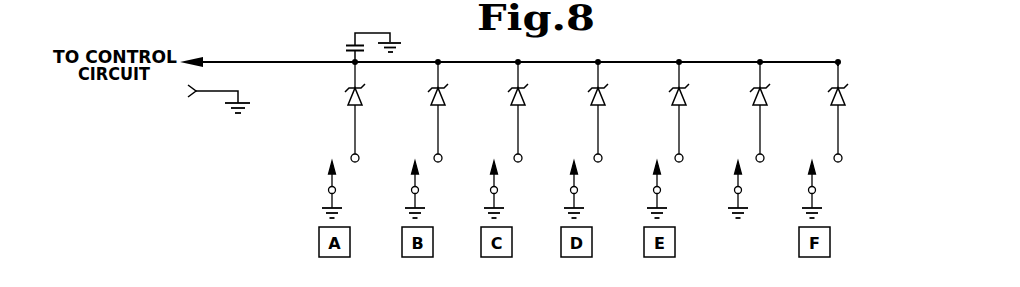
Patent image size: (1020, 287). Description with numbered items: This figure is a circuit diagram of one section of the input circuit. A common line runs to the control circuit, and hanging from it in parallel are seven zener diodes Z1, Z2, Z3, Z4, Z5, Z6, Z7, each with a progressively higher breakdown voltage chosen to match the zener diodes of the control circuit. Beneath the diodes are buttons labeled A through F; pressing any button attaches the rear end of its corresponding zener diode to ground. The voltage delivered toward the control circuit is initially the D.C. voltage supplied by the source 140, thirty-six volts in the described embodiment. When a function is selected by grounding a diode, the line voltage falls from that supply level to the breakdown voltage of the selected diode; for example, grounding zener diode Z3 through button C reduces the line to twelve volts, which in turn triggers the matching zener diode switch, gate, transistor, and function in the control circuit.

The zener diode Z1 is at (351, 102).
The zener diode Z2 is at (434, 102).
The zener diode Z3 is at (514, 102).
The zener diode Z4 is at (594, 102).
The zener diode Z5 is at (675, 102).
The zener diode Z6 is at (756, 102).
The zener diode Z7 is at (842, 110).
The source 140 is at (252, 4).